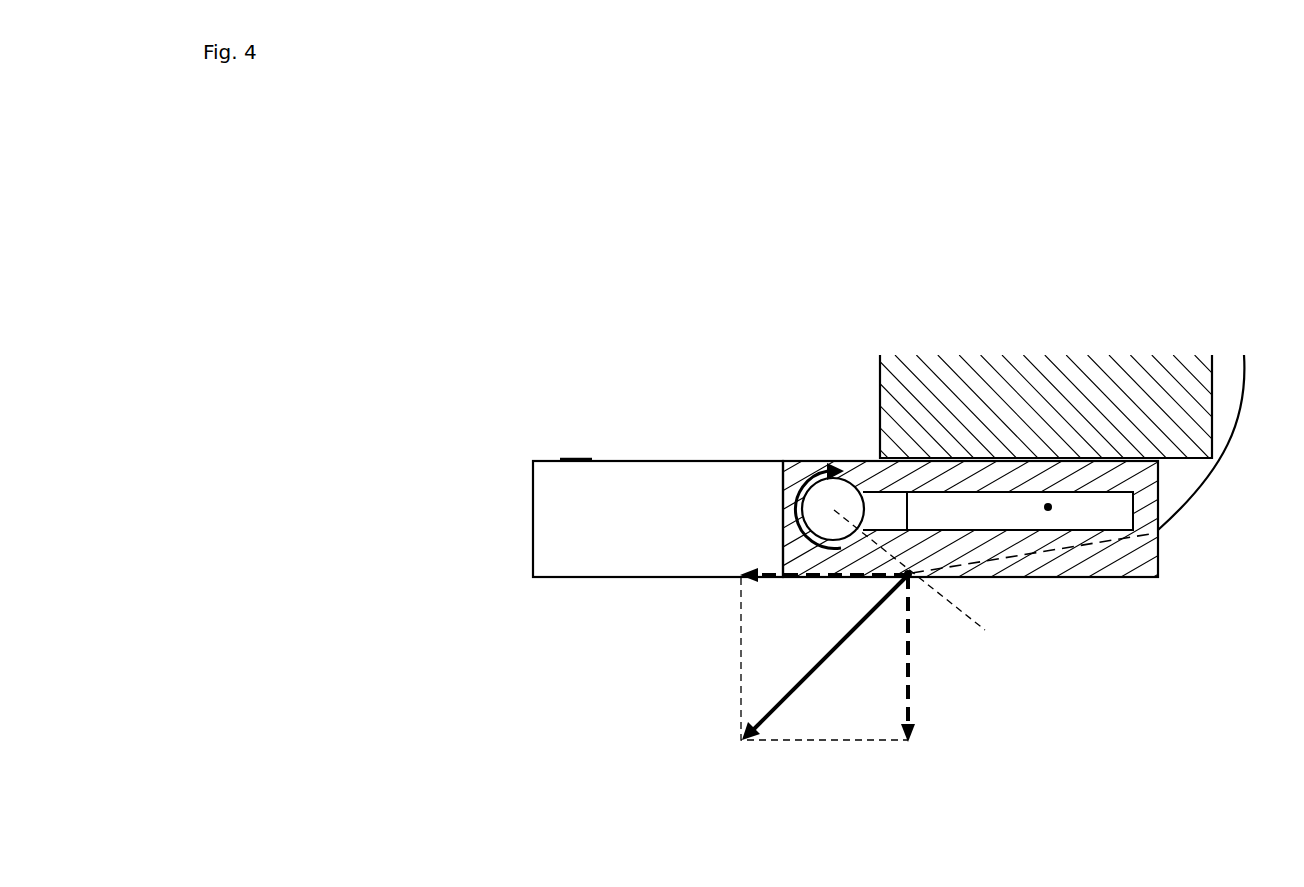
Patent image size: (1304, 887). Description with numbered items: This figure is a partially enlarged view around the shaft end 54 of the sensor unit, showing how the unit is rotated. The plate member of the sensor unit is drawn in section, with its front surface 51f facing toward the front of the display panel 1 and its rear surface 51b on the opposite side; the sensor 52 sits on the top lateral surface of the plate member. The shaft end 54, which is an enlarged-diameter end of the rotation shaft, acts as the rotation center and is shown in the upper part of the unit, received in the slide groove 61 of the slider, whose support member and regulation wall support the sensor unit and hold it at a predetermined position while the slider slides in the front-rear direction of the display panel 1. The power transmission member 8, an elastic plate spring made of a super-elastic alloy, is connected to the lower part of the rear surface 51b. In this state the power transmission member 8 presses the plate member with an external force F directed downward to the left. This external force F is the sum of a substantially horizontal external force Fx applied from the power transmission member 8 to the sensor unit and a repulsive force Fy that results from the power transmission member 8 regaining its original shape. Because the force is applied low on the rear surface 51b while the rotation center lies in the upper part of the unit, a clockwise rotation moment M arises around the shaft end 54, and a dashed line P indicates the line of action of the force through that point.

The display panel 1 is at (1212, 371).
The power transmission member 8 is at (1215, 480).
The front surface 51f is at (532, 517).
The rear surface 51b is at (910, 510).
The sensor 52 is at (576, 458).
The shaft end 54 is at (852, 493).
The slide groove 61 is at (1048, 507).
The rotation moment M is at (818, 472).
The external force F is at (795, 655).
The horizontal external force Fx is at (820, 561).
The repulsive force Fy is at (922, 658).
The line of action P is at (913, 578).